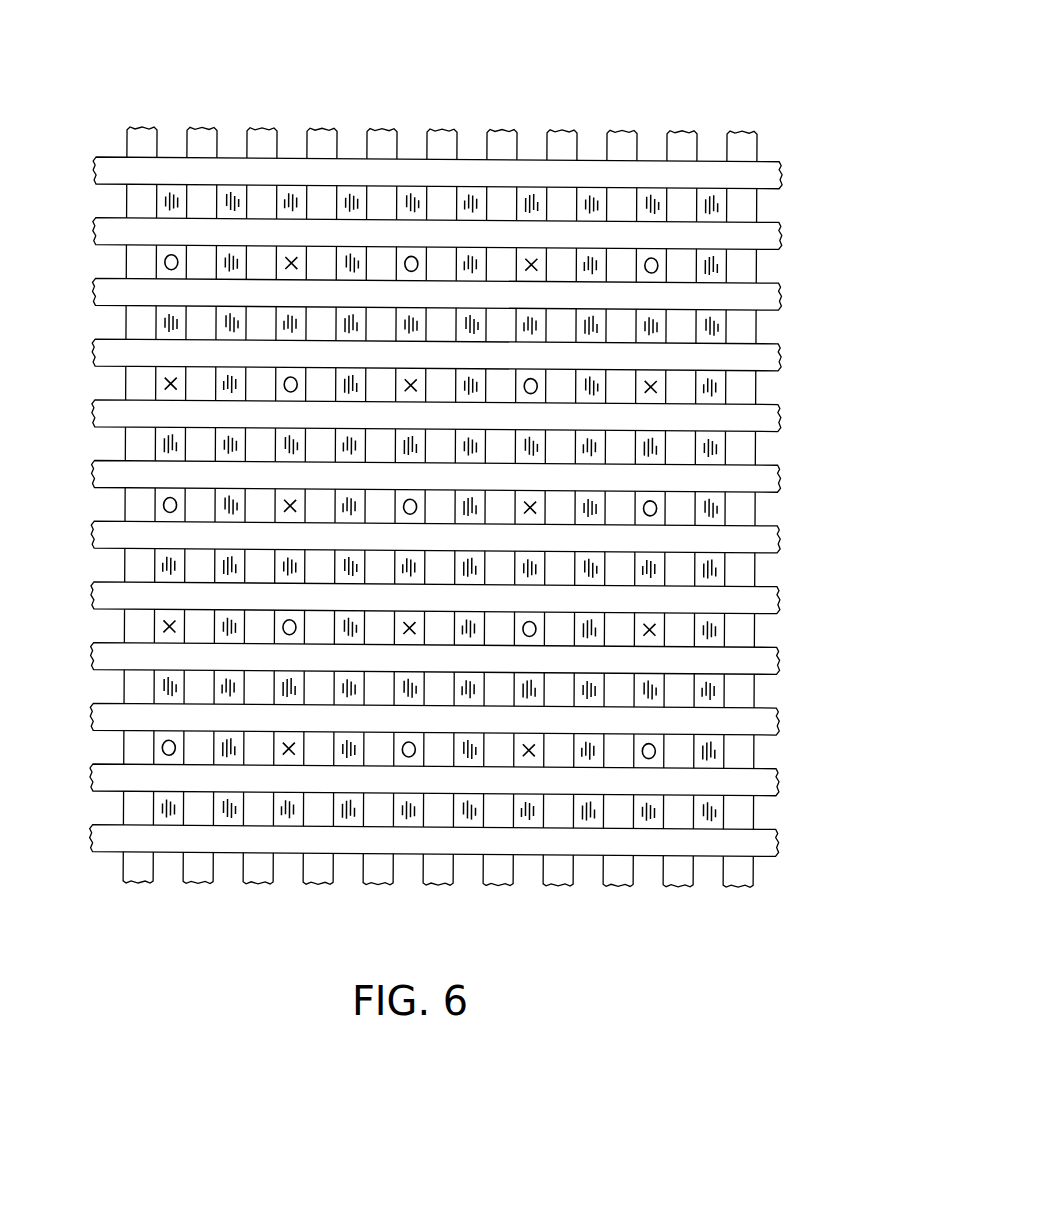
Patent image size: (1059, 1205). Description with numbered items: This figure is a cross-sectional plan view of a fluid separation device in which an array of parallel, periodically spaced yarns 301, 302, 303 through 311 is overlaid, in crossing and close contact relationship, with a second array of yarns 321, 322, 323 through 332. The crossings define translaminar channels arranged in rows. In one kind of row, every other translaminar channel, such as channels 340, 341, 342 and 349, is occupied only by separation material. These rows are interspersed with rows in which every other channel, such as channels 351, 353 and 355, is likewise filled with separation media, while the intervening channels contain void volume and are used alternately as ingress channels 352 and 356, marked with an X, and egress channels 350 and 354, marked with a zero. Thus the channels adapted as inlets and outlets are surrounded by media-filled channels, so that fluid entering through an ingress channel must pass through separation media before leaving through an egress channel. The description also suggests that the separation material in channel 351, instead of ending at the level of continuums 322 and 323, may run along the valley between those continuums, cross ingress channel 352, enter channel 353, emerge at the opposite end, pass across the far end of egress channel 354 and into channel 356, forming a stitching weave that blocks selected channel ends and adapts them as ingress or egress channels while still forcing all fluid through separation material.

The yarn 301 is at (141, 136).
The yarn 302 is at (203, 136).
The yarn 303 is at (263, 136).
The yarn 311 is at (749, 142).
The yarn 321 is at (773, 177).
The yarn 322 is at (773, 237).
The yarn 323 is at (775, 298).
The yarn 332 is at (770, 843).
The translaminar channel 340 is at (163, 199).
The translaminar channel 341 is at (240, 198).
The translaminar channel 342 is at (293, 198).
The translaminar channel 349 is at (720, 206).
The egress channel 350 is at (160, 263).
The translaminar channel 351 is at (225, 263).
The ingress channel 352 is at (283, 264).
The translaminar channel 353 is at (348, 266).
The egress channel 354 is at (420, 256).
The translaminar channel 355 is at (474, 260).
The ingress channel 356 is at (532, 262).